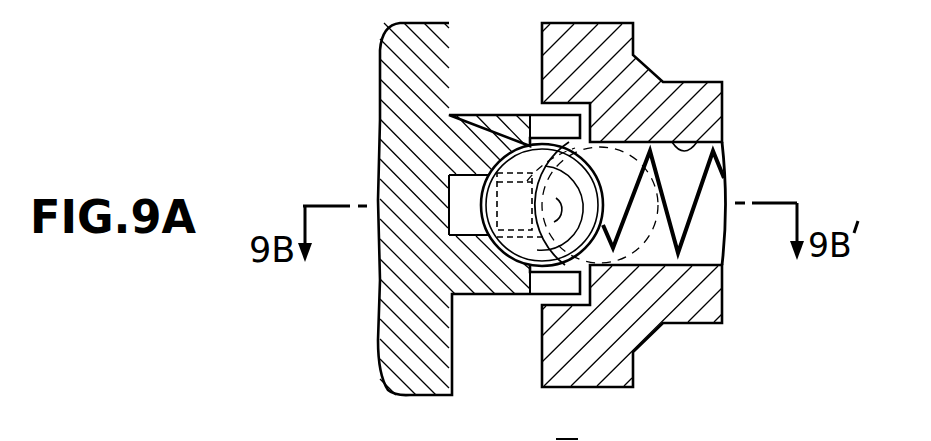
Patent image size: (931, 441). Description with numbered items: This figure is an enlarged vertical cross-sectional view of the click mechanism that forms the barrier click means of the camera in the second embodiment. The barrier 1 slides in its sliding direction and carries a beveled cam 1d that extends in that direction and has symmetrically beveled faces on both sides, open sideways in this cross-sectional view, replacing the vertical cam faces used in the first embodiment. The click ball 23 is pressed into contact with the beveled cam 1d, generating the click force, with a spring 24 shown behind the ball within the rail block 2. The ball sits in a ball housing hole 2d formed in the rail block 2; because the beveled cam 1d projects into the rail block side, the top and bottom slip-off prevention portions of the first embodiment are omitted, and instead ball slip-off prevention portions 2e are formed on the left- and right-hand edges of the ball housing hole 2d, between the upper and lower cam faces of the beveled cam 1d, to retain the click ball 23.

The barrier 1 is at (390, 80).
The beveled cam 1d is at (497, 137).
The rail block 2 is at (623, 40).
The ball housing hole 2d is at (716, 132).
The ball slip-off prevention portion 2e is at (455, 237).
The click ball 23 is at (483, 218).
The coil spring 24 is at (717, 162).